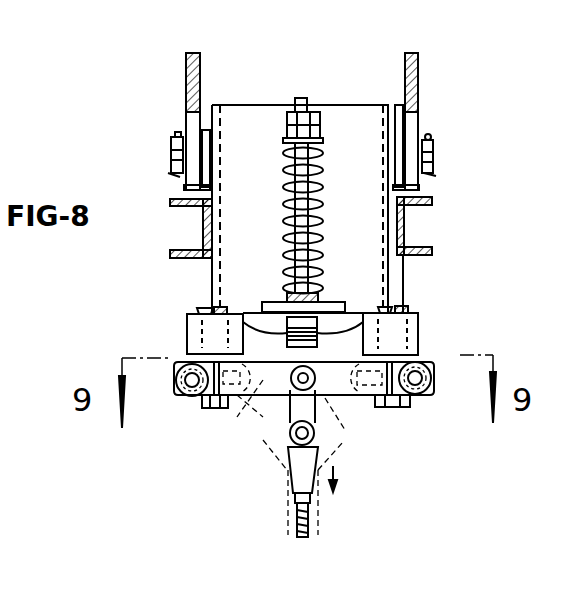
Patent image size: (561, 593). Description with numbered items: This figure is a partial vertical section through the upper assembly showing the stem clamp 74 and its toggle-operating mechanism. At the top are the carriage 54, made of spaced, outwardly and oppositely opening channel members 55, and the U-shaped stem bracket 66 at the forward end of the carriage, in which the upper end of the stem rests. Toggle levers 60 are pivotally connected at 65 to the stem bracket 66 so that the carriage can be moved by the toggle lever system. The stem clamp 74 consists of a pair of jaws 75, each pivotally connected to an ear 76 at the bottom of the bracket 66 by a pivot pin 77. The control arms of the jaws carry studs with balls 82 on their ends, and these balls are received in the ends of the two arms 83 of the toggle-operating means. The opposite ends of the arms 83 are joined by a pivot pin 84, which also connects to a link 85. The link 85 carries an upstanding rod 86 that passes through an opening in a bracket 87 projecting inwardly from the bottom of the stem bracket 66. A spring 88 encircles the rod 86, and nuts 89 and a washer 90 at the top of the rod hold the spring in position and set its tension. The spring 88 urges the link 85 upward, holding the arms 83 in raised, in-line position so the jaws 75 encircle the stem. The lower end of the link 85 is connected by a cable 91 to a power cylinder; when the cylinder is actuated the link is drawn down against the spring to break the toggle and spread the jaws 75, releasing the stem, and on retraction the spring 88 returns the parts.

The carriage 54 is at (430, 226).
The channel members 55 is at (170, 250).
The levers 60 is at (186, 78).
The pivot 65 is at (435, 148).
The U-shaped stem bracket 66 is at (352, 105).
The stem clamp 74 is at (424, 404).
The jaws 75 is at (442, 353).
The ear 76 is at (187, 326).
The pivot pin 77 is at (200, 308).
The balls 82 is at (191, 397).
The arms 83 is at (258, 408).
The pivot pin 84 is at (300, 384).
The link 85 is at (243, 320).
The rod 86 is at (303, 98).
The bracket 87 is at (335, 306).
The spring 88 is at (285, 186).
The nuts 89 is at (290, 115).
The washer 90 is at (289, 141).
The cable 91 is at (308, 513).